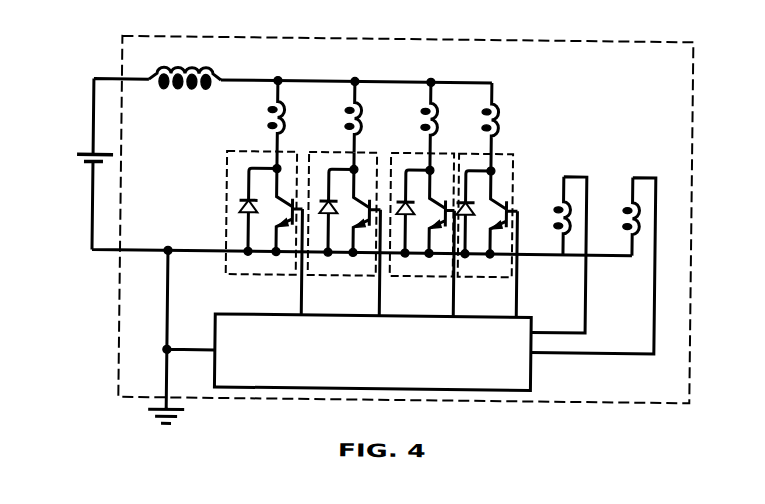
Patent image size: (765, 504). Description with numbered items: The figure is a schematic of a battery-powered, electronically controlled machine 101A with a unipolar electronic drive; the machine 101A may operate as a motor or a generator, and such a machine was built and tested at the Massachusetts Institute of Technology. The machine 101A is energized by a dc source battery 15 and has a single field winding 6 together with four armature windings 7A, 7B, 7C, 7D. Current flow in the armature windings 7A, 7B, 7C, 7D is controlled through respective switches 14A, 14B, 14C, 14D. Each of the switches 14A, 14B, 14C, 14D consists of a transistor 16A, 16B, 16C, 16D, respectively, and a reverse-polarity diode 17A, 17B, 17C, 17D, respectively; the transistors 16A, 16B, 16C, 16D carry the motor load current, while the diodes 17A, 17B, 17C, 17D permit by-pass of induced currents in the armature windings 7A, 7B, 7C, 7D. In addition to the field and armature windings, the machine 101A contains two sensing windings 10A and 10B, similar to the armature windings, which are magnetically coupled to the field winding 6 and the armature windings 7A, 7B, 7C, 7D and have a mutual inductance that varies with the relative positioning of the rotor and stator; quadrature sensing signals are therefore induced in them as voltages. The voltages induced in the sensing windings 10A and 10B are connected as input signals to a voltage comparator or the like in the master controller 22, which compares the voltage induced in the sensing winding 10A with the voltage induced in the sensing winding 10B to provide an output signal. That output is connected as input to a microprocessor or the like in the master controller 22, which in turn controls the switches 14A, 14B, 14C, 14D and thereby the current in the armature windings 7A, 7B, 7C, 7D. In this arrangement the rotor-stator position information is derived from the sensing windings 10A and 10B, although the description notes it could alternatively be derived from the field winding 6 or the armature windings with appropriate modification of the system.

The electronically controlled machine 101A is at (313, 34).
The field winding 6 is at (185, 70).
The dc source battery 15 is at (84, 160).
The armature winding 7A is at (271, 118).
The armature winding 7B is at (360, 120).
The armature winding 7C is at (437, 110).
The armature winding 7D is at (497, 108).
The switch 14A is at (248, 278).
The switch 14B is at (321, 278).
The switch 14C is at (404, 278).
The switch 14D is at (471, 278).
The transistor 16A is at (279, 195).
The transistor 16B is at (357, 195).
The transistor 16C is at (432, 195).
The transistor 16D is at (498, 205).
The reverse-polarity diode 17A is at (242, 208).
The reverse-polarity diode 17B is at (332, 222).
The reverse-polarity diode 17C is at (410, 228).
The reverse-polarity diode 17D is at (470, 230).
The sensing winding 10A is at (561, 226).
The sensing winding 10B is at (628, 226).
The master controller 22 is at (533, 366).